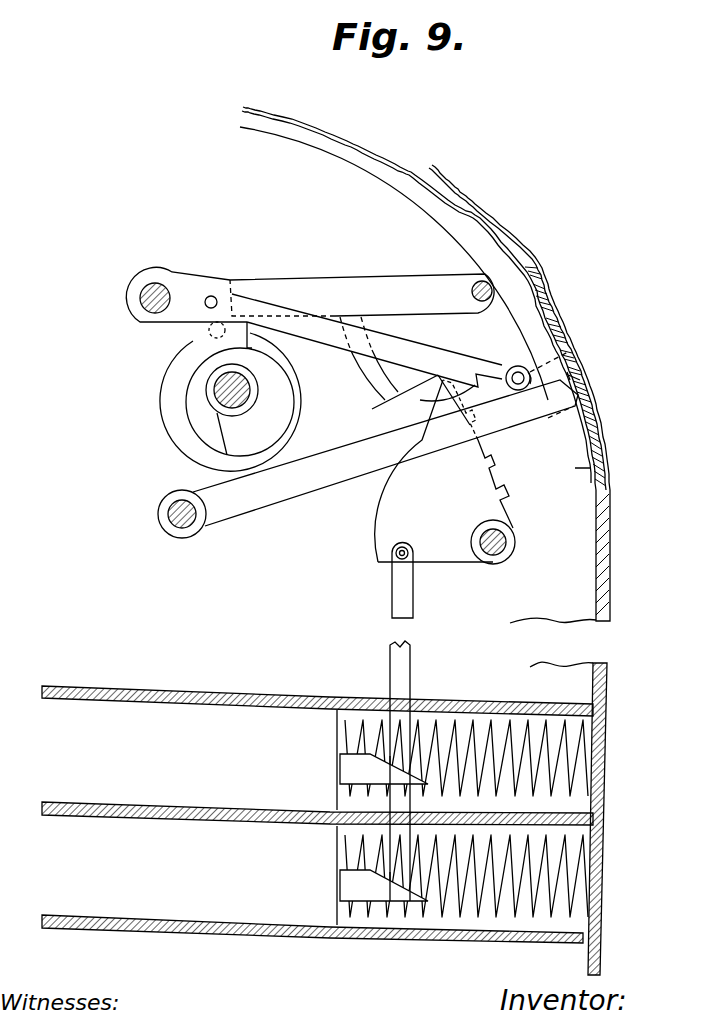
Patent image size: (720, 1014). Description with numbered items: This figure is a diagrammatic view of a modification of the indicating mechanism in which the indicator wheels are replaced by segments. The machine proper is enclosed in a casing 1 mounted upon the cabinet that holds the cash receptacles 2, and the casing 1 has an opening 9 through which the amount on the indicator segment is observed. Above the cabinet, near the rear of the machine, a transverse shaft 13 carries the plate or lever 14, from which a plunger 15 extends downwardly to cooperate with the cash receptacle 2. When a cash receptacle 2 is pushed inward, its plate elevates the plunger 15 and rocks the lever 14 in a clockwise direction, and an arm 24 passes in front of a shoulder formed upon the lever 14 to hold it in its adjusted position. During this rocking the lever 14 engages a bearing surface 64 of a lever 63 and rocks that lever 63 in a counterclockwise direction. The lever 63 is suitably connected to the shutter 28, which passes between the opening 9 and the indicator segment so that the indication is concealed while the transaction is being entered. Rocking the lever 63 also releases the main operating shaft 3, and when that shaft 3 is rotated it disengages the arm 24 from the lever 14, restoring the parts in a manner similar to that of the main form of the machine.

The casing 1 is at (612, 571).
The cash receptacles 2 is at (324, 818).
The main operating shaft 3 is at (222, 396).
The opening 9 is at (588, 366).
The transverse shaft 13 is at (507, 551).
The lever 14 is at (475, 508).
The plunger 15 is at (403, 604).
The arm 24 is at (362, 369).
The shutter 28 is at (581, 411).
The lever 63 is at (452, 354).
The bearing surface 64 is at (498, 416).